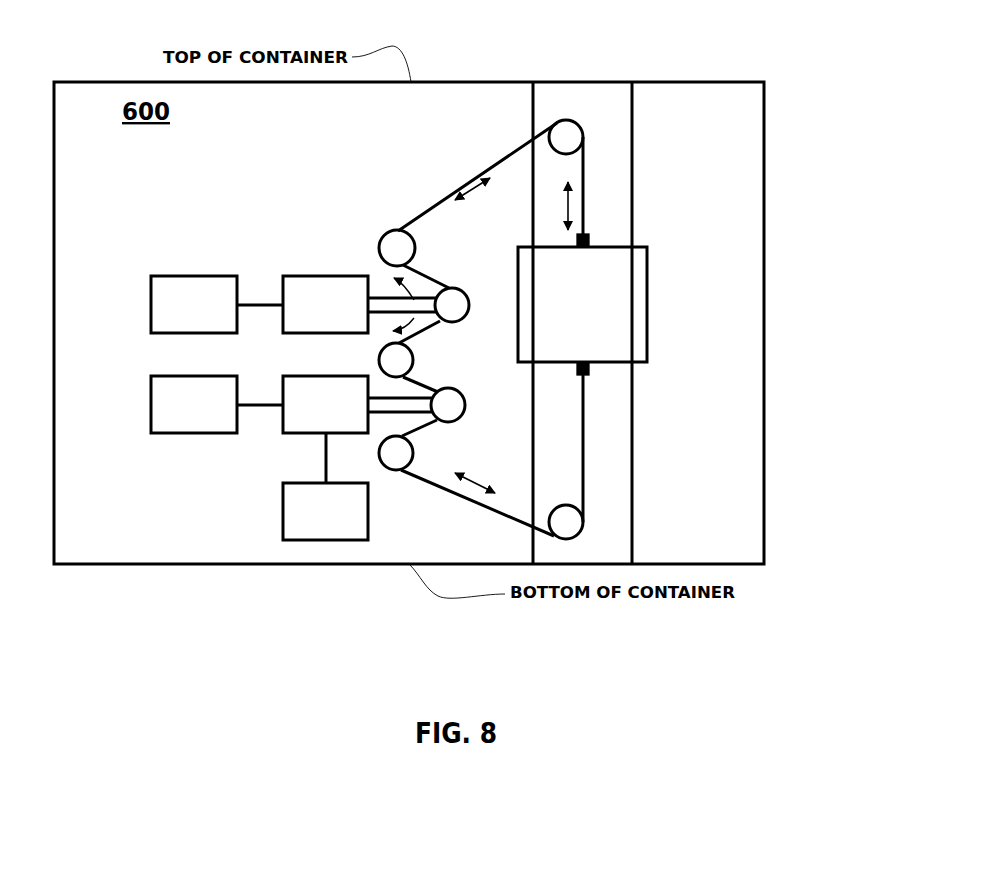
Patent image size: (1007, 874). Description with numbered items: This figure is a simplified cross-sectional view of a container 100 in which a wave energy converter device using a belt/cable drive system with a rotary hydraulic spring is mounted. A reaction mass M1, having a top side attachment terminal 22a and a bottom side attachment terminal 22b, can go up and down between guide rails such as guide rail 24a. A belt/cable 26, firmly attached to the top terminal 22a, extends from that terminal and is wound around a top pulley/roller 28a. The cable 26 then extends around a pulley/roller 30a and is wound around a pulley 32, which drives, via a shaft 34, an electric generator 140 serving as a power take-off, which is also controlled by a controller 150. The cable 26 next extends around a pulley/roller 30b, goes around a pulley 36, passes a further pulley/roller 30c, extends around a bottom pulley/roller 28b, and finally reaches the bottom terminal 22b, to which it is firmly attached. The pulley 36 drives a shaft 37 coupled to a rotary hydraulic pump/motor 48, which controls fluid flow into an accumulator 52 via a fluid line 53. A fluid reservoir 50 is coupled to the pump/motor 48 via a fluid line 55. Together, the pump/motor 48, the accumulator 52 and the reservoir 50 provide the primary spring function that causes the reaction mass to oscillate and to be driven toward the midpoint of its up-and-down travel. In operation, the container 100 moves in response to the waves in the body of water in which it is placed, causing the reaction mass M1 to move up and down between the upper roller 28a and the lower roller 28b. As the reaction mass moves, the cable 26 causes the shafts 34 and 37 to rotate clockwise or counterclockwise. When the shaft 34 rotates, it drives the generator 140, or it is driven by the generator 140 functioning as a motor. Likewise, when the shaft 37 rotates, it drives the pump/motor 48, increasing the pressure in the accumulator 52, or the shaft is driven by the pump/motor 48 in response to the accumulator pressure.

The container 100 is at (765, 178).
The guide rail 24a is at (532, 117).
The top pulley/roller 28a is at (565, 138).
The bottom pulley/roller 28b is at (566, 522).
The belt/cable 26 is at (480, 174).
The top side attachment terminal 22a is at (592, 240).
The bottom side attachment terminal 22b is at (590, 372).
The reaction mass M1 is at (633, 317).
The pulley/roller 30a is at (394, 247).
The pulley/roller 30b is at (396, 360).
The idler pulley 30c is at (396, 455).
The pulley 32 is at (452, 306).
The pulley 36 is at (448, 406).
The shaft 34 is at (370, 296).
The shaft 37 is at (410, 398).
The controller 150 is at (195, 305).
The electric generator 140 is at (327, 305).
The accumulator 52 is at (195, 407).
The fluid line 53 is at (256, 405).
The rotary hydraulic pump/motor 48 is at (327, 405).
The fluid line 55 is at (322, 457).
The fluid reservoir 50 is at (327, 510).